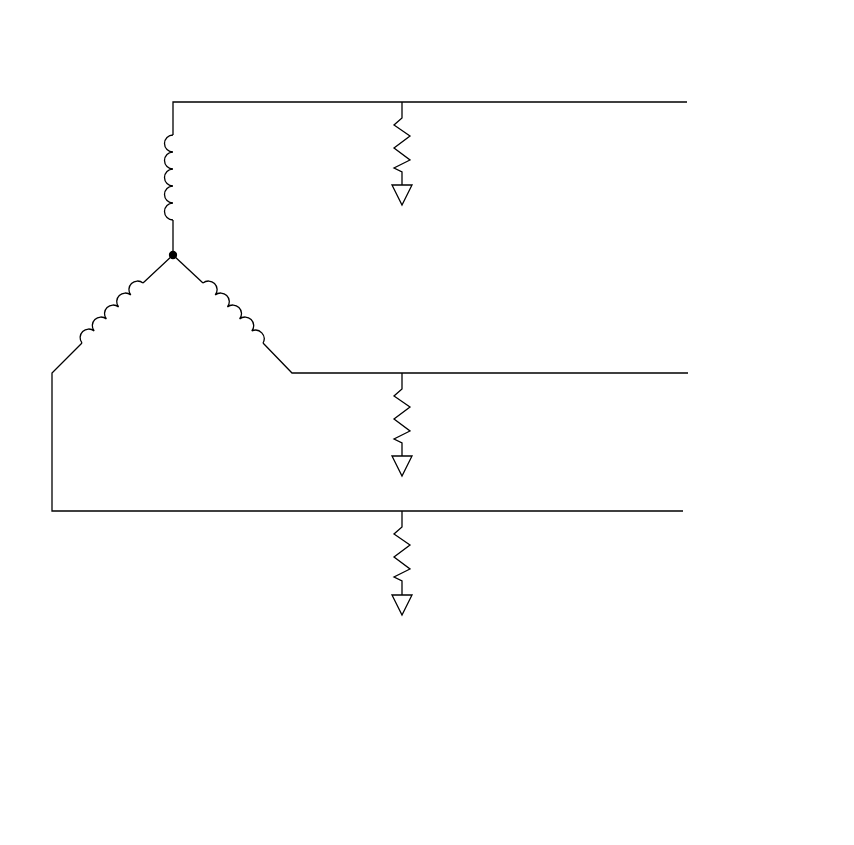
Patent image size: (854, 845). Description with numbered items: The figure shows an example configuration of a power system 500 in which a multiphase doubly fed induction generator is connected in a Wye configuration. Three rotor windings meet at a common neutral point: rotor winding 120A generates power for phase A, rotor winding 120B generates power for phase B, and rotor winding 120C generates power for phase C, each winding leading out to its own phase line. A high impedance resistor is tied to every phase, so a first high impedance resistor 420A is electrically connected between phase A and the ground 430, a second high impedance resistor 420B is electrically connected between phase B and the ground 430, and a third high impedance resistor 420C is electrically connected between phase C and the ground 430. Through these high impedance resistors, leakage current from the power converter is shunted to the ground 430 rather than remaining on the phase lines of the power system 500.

The power system 500 is at (500, 52).
The rotor winding 120A is at (165, 163).
The rotor winding 120B is at (240, 311).
The rotor winding 120C is at (121, 298).
The first high impedance resistor 420A is at (406, 141).
The second high impedance resistor 420B is at (406, 411).
The third high impedance resistor 420C is at (406, 551).
The ground 430 is at (412, 197).